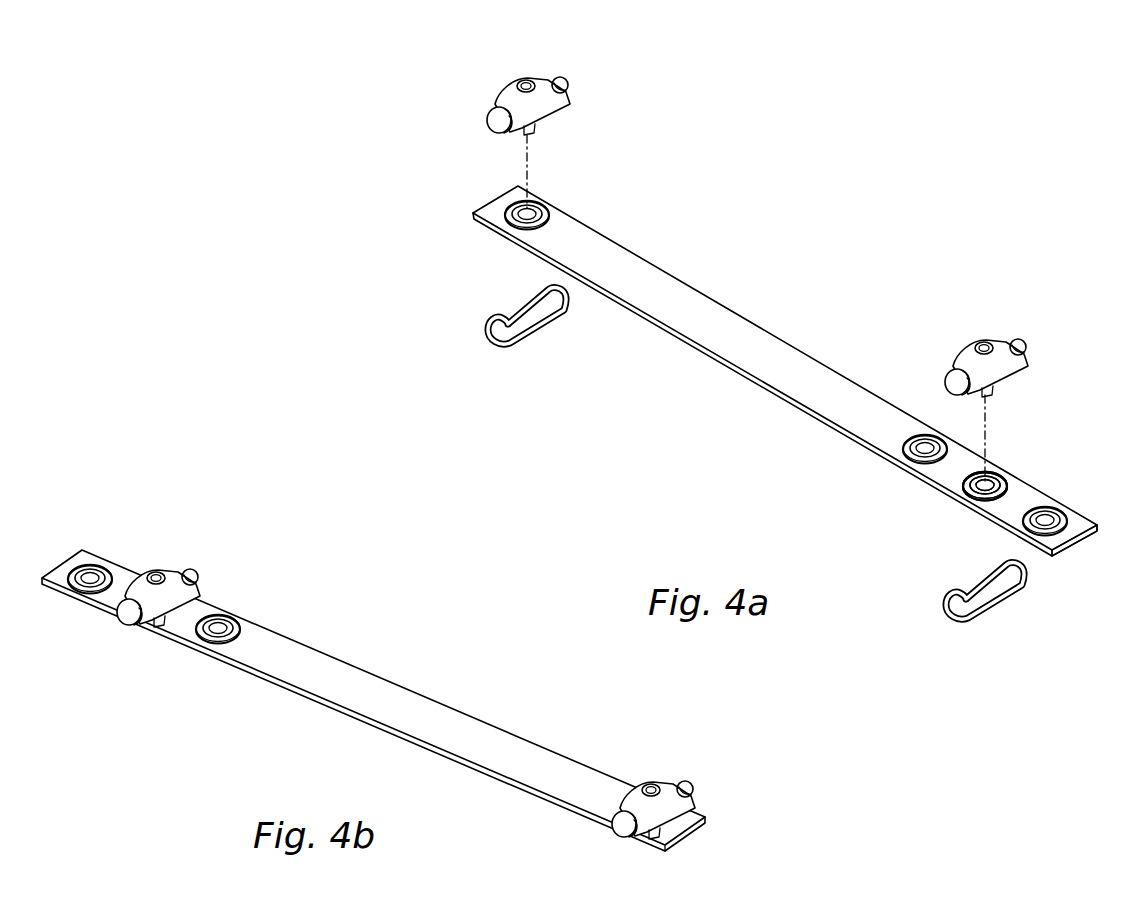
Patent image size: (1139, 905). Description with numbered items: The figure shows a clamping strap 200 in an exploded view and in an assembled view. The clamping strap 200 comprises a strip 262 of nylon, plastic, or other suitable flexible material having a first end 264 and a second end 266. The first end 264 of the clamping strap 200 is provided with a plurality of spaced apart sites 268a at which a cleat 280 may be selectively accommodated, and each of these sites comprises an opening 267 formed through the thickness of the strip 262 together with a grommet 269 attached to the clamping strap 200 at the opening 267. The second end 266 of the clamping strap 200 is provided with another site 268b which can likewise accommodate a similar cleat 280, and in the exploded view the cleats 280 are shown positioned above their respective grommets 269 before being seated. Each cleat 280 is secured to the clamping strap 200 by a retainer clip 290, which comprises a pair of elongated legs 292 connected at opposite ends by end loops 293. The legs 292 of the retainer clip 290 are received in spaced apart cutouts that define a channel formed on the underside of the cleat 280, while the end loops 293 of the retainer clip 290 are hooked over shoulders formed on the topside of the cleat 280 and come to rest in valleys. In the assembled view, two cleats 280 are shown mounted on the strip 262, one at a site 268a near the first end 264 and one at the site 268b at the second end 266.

In FIG. 4B, the clamping strap 200 is at (143, 501).
In FIG. 4A, the strip 262 is at (755, 338).
In FIG. 4A, the first end 264 is at (1075, 509).
In FIG. 4A, the second end 266 is at (480, 226).
In FIG. 4A, the opening 267 is at (995, 468).
In FIG. 4A, the spaced apart sites 268a is at (1021, 514).
In FIG. 4A, the site 268b is at (548, 212).
In FIG. 4A, the grommet 269 is at (985, 480).
In FIG. 4A, the cleat 280 is at (508, 98).
In FIG. 4B, the cleat 280 is at (172, 600).
In FIG. 4A, the retainer clip 290 is at (496, 343).
In FIG. 4A, the elongated legs 292 is at (535, 337).
In FIG. 4A, the end loops 293 is at (547, 283).